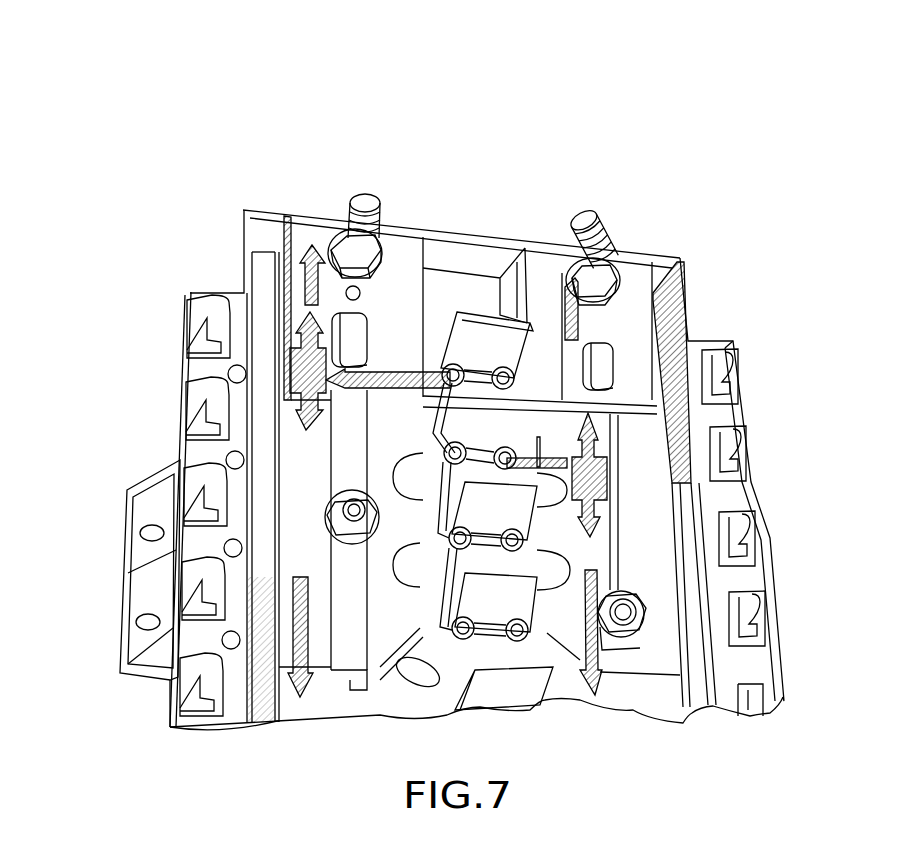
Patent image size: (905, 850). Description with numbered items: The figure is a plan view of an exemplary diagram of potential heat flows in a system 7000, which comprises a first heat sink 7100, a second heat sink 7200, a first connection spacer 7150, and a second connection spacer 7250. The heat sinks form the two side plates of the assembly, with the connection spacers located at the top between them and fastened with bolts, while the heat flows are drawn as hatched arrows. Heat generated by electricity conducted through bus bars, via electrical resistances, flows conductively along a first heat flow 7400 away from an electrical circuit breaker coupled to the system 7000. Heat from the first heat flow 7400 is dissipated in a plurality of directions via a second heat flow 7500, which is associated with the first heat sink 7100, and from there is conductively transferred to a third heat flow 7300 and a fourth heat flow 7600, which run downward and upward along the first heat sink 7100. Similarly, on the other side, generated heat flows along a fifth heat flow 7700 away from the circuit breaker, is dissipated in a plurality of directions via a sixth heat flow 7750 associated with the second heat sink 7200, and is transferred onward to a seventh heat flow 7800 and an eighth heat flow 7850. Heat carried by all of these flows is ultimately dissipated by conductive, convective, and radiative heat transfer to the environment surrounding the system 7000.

The system 7000 is at (178, 33).
The first heat sink 7100 is at (302, 481).
The first connection spacer 7150 is at (300, 222).
The second heat sink 7200 is at (642, 550).
The second connection spacer 7250 is at (626, 371).
The third heat flow 7300 is at (296, 628).
The first heat flow 7400 is at (395, 376).
The second heat flow 7500 is at (298, 371).
The fourth heat flow 7600 is at (302, 278).
The fifth heat flow 7700 is at (544, 459).
The sixth heat flow 7750 is at (600, 477).
The seventh heat flow 7800 is at (599, 582).
The eighth heat flow 7850 is at (584, 312).